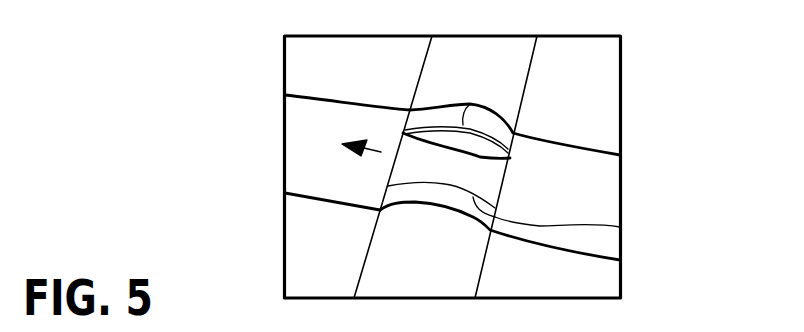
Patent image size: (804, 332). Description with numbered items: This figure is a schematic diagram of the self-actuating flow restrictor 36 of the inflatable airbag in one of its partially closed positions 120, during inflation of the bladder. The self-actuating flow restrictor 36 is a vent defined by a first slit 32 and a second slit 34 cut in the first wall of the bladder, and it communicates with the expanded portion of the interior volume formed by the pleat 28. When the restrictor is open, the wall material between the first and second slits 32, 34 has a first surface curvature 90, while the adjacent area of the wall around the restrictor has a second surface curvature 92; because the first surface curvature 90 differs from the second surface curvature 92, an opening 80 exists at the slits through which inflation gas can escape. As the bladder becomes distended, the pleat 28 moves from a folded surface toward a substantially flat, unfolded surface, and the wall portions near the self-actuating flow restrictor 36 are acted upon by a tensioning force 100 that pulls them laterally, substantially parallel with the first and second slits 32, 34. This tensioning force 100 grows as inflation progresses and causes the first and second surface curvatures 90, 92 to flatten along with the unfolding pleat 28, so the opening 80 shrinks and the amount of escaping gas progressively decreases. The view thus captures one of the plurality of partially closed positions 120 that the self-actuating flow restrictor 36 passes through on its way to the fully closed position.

The pleat 28 is at (507, 75).
The first slit 32 is at (470, 105).
The second slit 34 is at (620, 227).
The self-actuating flow restrictor 36 is at (260, 156).
The opening 80 is at (460, 146).
The first surface curvature 90 is at (417, 173).
The second surface curvature 92 is at (440, 73).
The tensioning force 100 is at (518, 181).
The partially closed position 120 is at (395, 238).